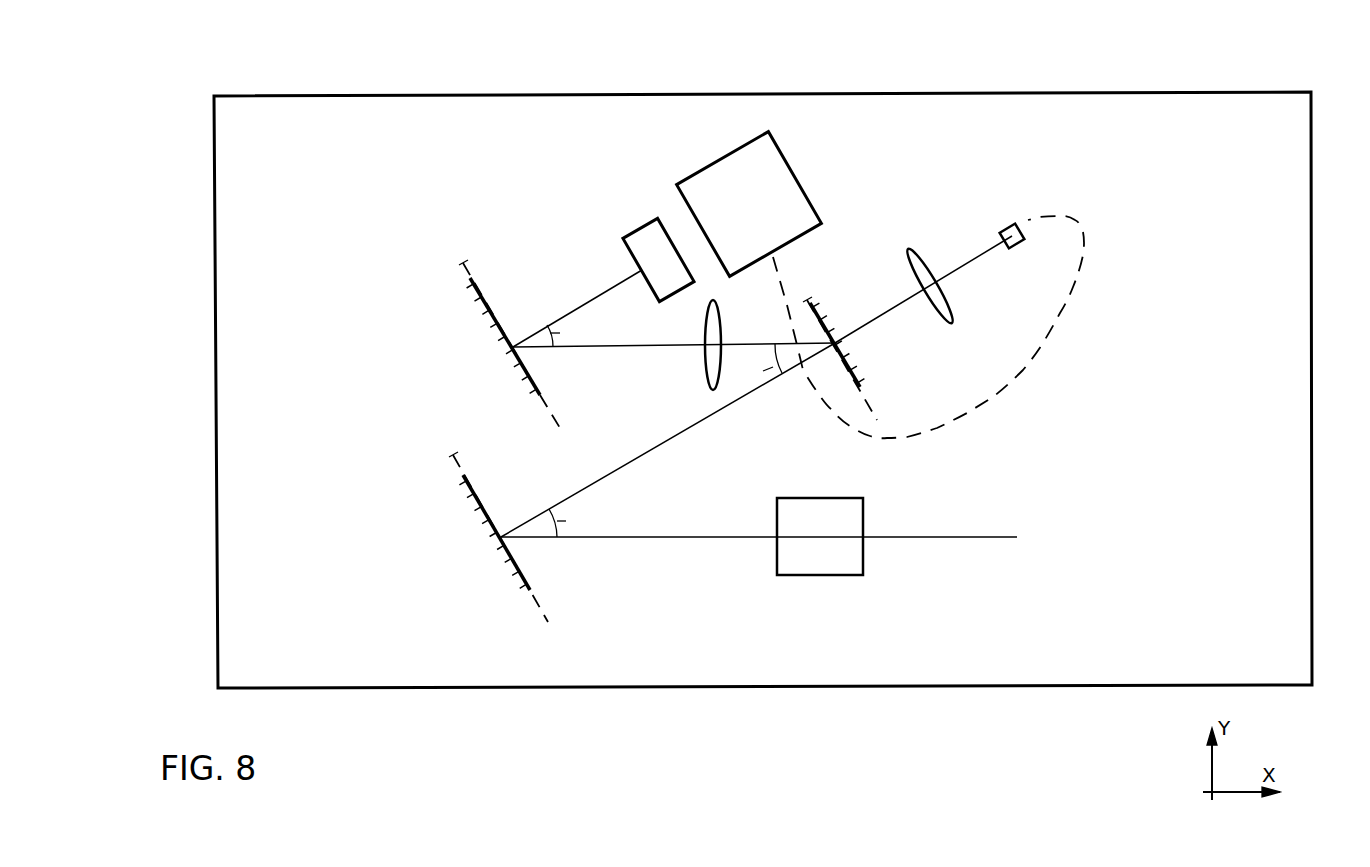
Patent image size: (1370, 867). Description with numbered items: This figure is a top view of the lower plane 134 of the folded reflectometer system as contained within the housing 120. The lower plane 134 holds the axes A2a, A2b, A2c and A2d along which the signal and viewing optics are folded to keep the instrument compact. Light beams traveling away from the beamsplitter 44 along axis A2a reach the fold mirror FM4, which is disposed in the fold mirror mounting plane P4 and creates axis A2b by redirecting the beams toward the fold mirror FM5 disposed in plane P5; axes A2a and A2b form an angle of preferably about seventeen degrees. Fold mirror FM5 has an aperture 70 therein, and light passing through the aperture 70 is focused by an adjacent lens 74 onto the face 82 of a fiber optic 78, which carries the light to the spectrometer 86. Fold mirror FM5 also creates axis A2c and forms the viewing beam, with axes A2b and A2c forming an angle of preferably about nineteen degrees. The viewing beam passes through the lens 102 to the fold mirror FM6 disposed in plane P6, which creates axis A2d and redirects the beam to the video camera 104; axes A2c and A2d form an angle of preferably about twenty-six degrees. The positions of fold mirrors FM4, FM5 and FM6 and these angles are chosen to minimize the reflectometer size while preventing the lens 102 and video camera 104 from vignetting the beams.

The housing 120 is at (454, 95).
The lower plane 134 is at (1068, 113).
The spectrometer 86 is at (763, 208).
The video camera 104 is at (645, 225).
The lens 102 is at (705, 375).
The lens 74 is at (911, 252).
The face 82 is at (1006, 228).
The aperture 70 is at (842, 343).
The fiber optic 78 is at (1030, 374).
The beamsplitter 44 is at (863, 555).
The fold mirror FM4 is at (488, 527).
The fold mirror FM5 is at (831, 320).
The fold mirror FM6 is at (497, 330).
The fold mirror mounting plane P4 is at (454, 461).
The fold mirror mounting plane P5 is at (868, 394).
The fold mirror mounting plane P6 is at (463, 268).
The axis A2a is at (641, 540).
The axis A2b is at (662, 443).
The axis A2c is at (637, 350).
The axis A2d is at (594, 297).